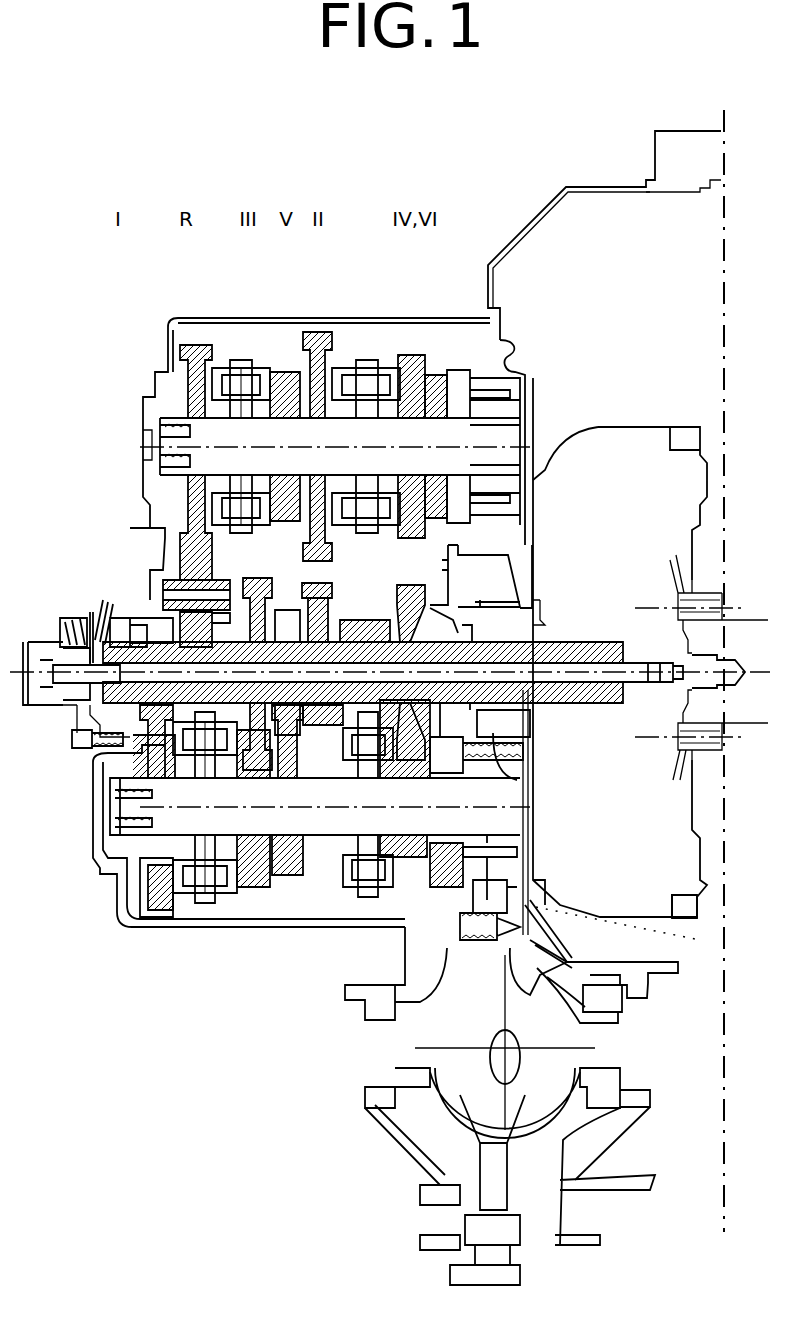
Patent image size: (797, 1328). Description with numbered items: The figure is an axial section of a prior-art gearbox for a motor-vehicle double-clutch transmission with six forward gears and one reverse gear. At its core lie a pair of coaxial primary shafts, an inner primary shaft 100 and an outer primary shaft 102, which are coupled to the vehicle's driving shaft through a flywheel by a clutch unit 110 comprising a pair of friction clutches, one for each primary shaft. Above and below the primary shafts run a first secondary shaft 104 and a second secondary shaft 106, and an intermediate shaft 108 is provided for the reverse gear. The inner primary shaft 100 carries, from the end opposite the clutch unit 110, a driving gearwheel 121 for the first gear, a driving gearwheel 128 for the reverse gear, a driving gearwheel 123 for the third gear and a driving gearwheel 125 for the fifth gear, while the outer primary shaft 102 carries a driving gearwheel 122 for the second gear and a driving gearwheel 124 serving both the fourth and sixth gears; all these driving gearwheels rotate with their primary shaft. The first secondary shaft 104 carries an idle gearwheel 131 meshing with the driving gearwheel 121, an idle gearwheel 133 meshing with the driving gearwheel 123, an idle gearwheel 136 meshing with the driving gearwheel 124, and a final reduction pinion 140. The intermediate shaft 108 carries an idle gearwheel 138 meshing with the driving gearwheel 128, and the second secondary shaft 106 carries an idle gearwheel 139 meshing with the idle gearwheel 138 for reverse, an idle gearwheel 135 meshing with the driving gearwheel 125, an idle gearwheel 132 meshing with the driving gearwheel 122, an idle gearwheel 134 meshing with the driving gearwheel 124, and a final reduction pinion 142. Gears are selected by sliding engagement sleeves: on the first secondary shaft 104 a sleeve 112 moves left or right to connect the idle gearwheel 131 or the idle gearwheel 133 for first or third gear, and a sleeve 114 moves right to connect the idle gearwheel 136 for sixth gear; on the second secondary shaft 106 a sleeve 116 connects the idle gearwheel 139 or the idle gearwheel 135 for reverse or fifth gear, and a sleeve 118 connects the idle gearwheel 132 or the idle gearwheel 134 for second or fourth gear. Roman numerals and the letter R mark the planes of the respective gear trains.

The inner primary shaft 100 is at (345, 650).
The outer primary shaft 102 is at (505, 772).
The first secondary shaft 104 is at (340, 870).
The second secondary shaft 106 is at (520, 425).
The intermediate shaft 108 is at (152, 535).
The clutch unit 110 is at (618, 470).
The sliding engagement sleeve 112 is at (200, 925).
The sliding engagement sleeve 114 is at (380, 880).
The sliding engagement sleeve 116 is at (240, 365).
The sliding engagement sleeve 118 is at (370, 360).
The driving gearwheel 121 is at (148, 640).
The driving gearwheel 122 is at (292, 875).
The driving gearwheel 123 is at (255, 615).
The driving gearwheel 124 is at (405, 590).
The driving gearwheel 125 is at (262, 887).
The driving gearwheel 128 is at (190, 725).
The idle gearwheel 131 is at (150, 930).
The idle gearwheel 132 is at (318, 335).
The idle gearwheel 133 is at (255, 905).
The idle gearwheel 134 is at (430, 375).
The idle gearwheel 135 is at (345, 375).
The idle gearwheel 136 is at (368, 890).
The idle gearwheel 138 is at (175, 512).
The idle gearwheel 139 is at (192, 360).
The final reduction pinion 140 is at (505, 868).
The final reduction pinion 142 is at (512, 360).